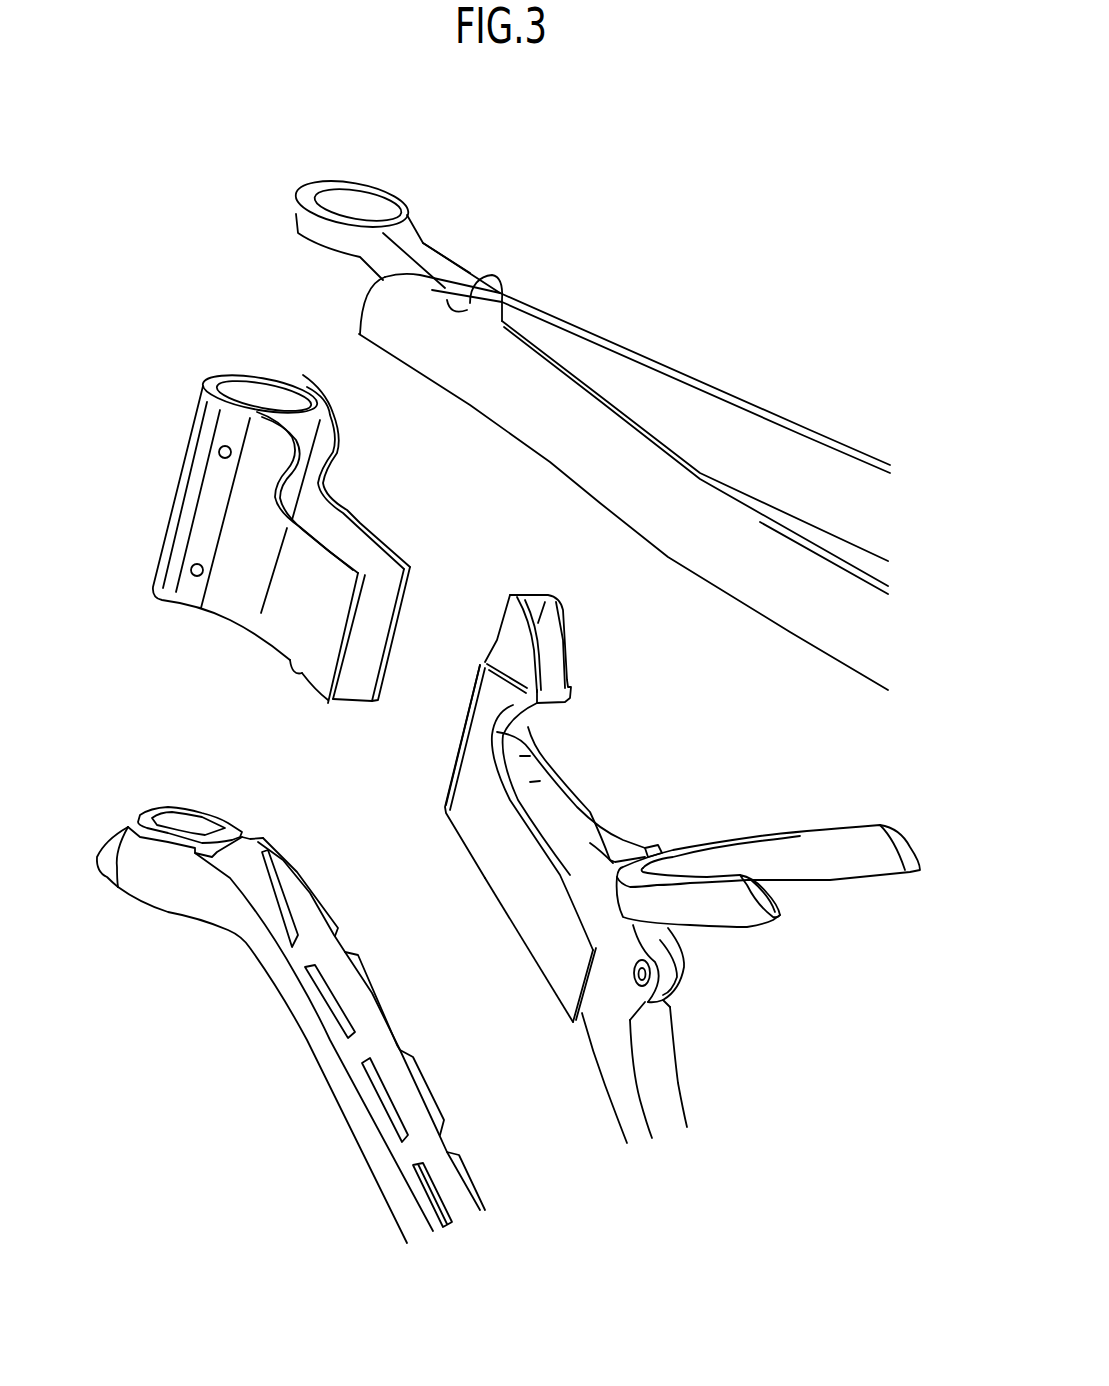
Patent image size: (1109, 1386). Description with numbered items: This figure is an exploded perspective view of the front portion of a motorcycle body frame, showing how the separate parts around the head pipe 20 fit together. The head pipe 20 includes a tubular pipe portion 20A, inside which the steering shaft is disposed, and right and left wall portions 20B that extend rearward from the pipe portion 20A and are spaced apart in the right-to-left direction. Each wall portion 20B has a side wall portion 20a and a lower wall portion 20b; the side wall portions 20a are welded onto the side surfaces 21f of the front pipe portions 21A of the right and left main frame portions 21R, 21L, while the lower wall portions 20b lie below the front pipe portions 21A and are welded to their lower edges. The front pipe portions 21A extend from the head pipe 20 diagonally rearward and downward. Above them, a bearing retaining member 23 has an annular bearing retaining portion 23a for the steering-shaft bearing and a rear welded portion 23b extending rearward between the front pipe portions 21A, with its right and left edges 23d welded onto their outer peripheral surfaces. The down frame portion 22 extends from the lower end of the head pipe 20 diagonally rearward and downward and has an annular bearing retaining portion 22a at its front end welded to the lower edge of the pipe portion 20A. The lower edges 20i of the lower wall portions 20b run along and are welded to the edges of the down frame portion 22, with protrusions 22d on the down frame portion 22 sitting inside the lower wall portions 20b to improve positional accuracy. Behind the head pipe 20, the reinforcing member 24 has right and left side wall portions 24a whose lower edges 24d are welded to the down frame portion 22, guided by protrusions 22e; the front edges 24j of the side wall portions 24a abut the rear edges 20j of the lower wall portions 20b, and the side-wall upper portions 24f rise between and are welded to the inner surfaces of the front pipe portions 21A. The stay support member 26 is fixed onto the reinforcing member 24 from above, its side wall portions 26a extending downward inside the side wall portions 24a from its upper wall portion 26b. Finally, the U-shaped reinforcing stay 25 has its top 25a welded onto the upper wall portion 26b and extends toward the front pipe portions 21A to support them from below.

The head pipe 20 is at (204, 356).
The pipe portion 20A is at (190, 433).
The side wall portion 20a is at (333, 432).
The wall portion 20B is at (370, 477).
The lower wall portion 20b is at (396, 552).
The lower edge 20i is at (290, 660).
The rear edge 20j is at (346, 678).
The front pipe portion 21A is at (733, 392).
The right main frame portion 21R is at (857, 409).
The left main frame portion 21L is at (790, 666).
The side surface 21f is at (754, 580).
The down frame portion 22 is at (274, 1066).
The bearing retaining portion 22a is at (145, 874).
The protrusion 22d is at (310, 885).
The protrusion 22e is at (390, 1105).
The bearing retaining member 23 is at (364, 167).
The bearing retaining portion 23a is at (315, 185).
The rear welded portion 23b is at (438, 256).
The edge 23d is at (478, 292).
The reinforcing member 24 is at (454, 877).
The side wall portion 24a is at (512, 845).
The lower edge 24d is at (537, 970).
The side-wall upper portion 24f is at (565, 635).
The front edge 24j is at (463, 745).
The reinforcing stay 25 is at (830, 908).
The top 25a is at (660, 844).
The stay support member 26 is at (705, 1024).
The side wall portion 26a is at (603, 1018).
The upper wall portion 26b is at (593, 833).